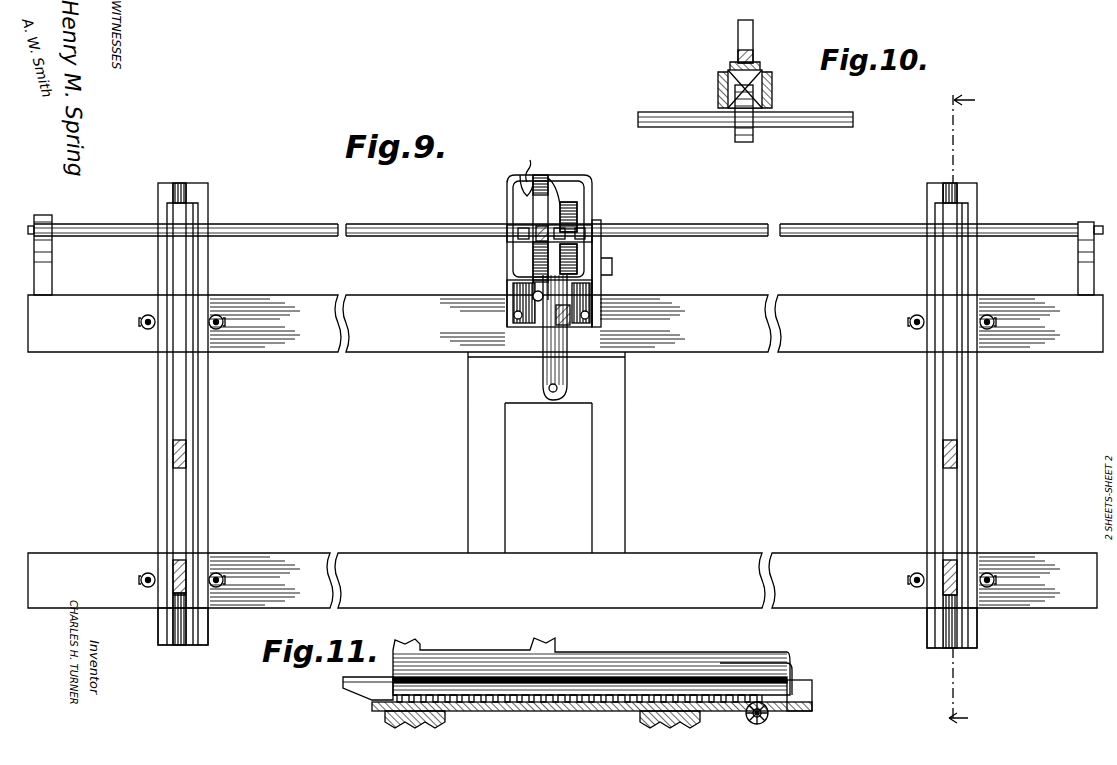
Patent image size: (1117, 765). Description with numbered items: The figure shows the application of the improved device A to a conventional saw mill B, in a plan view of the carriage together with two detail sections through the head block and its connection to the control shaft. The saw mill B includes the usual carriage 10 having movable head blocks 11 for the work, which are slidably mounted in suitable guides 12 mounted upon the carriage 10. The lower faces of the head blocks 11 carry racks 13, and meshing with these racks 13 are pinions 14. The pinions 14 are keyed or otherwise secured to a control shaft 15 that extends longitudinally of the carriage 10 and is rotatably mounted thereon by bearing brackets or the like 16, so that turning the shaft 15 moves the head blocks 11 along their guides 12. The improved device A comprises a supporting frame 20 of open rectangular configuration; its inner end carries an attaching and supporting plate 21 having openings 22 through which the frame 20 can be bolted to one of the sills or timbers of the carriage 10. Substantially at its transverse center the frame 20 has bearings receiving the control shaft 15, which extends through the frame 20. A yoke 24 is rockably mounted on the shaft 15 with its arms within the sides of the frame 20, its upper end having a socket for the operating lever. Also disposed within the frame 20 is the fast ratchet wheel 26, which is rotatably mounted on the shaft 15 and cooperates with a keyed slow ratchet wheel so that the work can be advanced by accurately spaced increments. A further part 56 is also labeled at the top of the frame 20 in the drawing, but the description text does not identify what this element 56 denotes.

In FIG. 9, the carriage 10 is at (378, 355).
In FIG. 9, the head blocks 11 is at (182, 533).
In FIG. 10, the head blocks 11 is at (753, 42).
In FIG. 11, the head blocks 11 is at (575, 668).
In FIG. 9, the guides 12 is at (198, 637).
In FIG. 10, the guides 12 is at (772, 92).
In FIG. 11, the guides 12 is at (555, 713).
In FIG. 10, the racks 13 is at (718, 88).
In FIG. 11, the racks 13 is at (455, 711).
In FIG. 10, the pinions 14 is at (744, 142).
In FIG. 11, the pinions 14 is at (770, 722).
In FIG. 9, the control shaft 15 is at (748, 222).
In FIG. 10, the control shaft 15 is at (838, 122).
In FIG. 11, the control shaft 15 is at (744, 713).
In FIG. 9, the bearing brackets 16 is at (52, 280).
In FIG. 9, the supporting frame 20 is at (513, 197).
In FIG. 9, the attaching and supporting plate 21 is at (510, 288).
In FIG. 9, the openings 22 is at (518, 315).
In FIG. 9, the yoke 24 is at (520, 212).
In FIG. 9, the fast ratchet wheel 26 is at (562, 202).
In FIG. 9, the lever 56 is at (532, 175).
In FIG. 9, the improved device A is at (592, 210).
In FIG. 9, the saw mill B is at (670, 310).
In FIG. 10, the saw mill B is at (712, 84).
In FIG. 11, the saw mill B is at (725, 665).